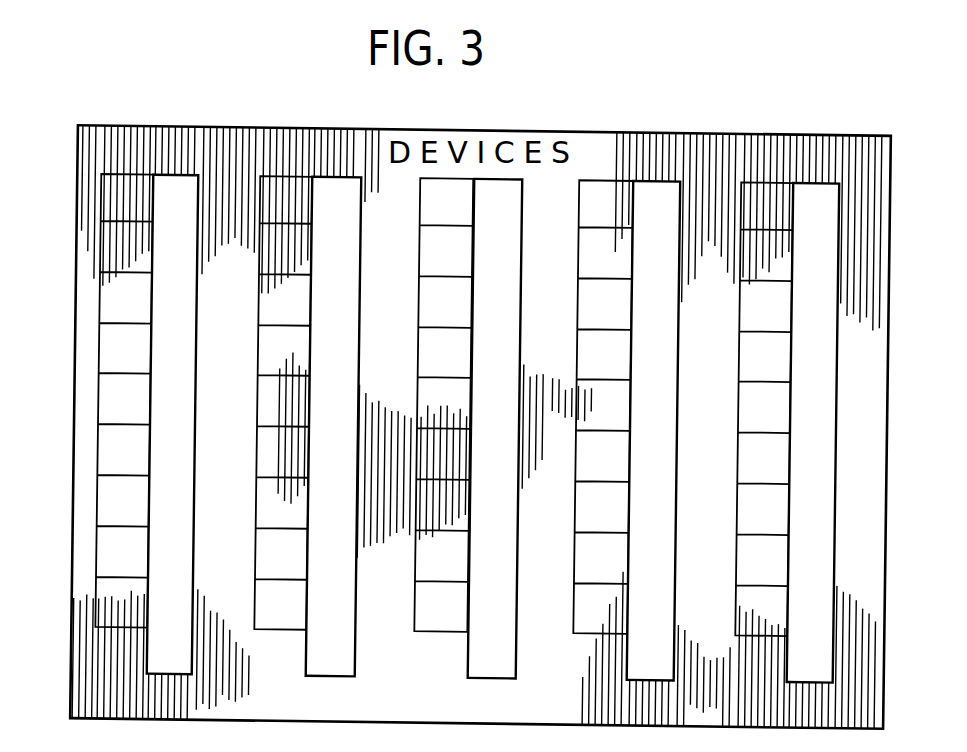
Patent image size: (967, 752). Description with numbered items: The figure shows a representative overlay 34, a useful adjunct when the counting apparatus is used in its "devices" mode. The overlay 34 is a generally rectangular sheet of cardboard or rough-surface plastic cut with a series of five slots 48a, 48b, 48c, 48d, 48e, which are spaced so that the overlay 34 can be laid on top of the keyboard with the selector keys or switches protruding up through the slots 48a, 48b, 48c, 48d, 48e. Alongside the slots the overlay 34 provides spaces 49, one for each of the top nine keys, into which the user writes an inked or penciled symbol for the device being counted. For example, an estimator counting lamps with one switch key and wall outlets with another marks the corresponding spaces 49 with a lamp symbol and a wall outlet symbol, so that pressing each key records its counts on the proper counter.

The overlay 34 is at (888, 391).
The spaces 49 is at (103, 176).
The slot 48a is at (174, 177).
The slot 48b is at (327, 177).
The slot 48c is at (505, 180).
The slot 48d is at (665, 180).
The slot 48e is at (825, 180).